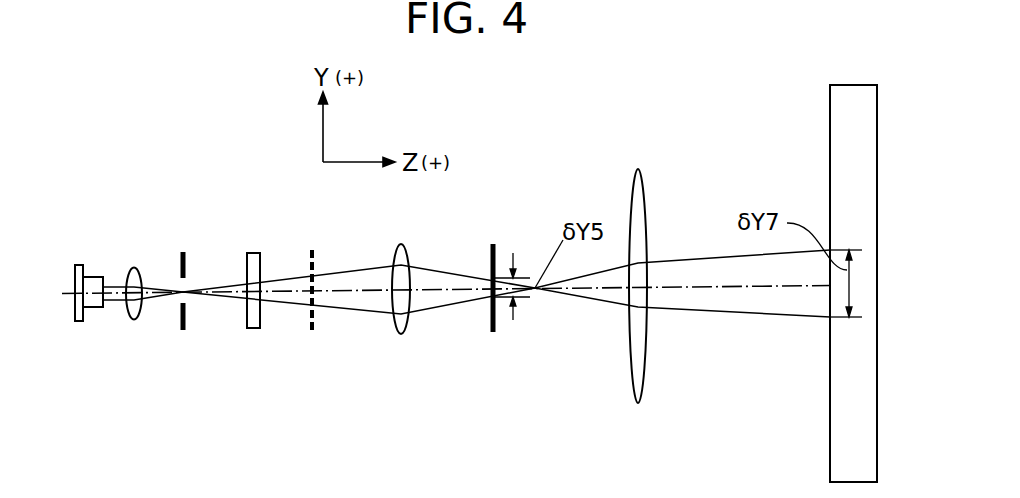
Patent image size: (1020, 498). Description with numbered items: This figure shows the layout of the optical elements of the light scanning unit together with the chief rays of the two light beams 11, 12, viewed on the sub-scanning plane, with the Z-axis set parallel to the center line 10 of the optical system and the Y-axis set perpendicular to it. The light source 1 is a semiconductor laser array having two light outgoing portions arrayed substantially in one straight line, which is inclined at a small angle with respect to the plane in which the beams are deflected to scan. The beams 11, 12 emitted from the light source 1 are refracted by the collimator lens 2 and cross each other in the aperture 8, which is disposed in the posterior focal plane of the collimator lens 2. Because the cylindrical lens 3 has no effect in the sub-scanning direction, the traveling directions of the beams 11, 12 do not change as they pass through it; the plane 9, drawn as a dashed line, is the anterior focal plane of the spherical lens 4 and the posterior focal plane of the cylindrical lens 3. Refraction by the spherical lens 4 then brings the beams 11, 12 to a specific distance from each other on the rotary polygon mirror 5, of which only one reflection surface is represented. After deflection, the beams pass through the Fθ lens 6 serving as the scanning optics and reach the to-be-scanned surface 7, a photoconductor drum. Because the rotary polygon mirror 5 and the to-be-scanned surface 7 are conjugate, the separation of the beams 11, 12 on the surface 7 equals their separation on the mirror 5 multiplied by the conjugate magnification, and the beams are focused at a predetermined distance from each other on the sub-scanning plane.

The light source 1 is at (95, 280).
The collimator lens 2 is at (134, 267).
The cylindrical lens 3 is at (253, 253).
The spherical lens 4 is at (402, 257).
The rotary polygon mirror 5 is at (495, 250).
The Fθ lens 6 is at (637, 200).
The to-be-scanned surface 7 is at (838, 132).
The aperture 8 is at (183, 252).
The anterior focal plane of the spherical lens 9 is at (313, 250).
The center line of the optical system 10 is at (378, 289).
The paraxial ray of a beam 11 is at (112, 301).
The paraxial ray of a beam 12 is at (114, 286).